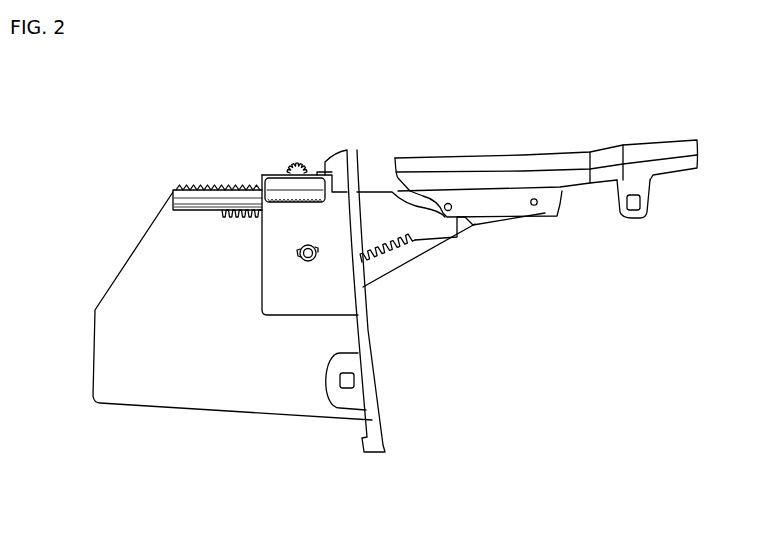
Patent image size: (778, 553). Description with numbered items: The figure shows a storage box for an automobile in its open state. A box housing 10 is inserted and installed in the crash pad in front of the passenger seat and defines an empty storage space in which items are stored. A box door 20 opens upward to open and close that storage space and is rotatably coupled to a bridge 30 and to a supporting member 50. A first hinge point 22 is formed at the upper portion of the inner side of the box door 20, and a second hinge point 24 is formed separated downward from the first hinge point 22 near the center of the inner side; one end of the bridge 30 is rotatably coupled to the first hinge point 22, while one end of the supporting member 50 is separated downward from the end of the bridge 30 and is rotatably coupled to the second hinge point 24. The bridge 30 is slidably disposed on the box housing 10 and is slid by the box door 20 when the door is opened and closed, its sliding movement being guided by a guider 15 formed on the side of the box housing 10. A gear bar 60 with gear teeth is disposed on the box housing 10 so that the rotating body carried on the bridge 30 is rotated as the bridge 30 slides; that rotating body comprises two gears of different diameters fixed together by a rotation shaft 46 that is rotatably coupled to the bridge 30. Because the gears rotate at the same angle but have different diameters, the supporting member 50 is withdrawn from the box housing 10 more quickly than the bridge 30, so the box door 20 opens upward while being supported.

The box housing 10 is at (228, 401).
The guider 15 is at (240, 189).
The box door 20 is at (563, 161).
The first hinge point 22 is at (444, 203).
The second hinge point 24 is at (532, 198).
The bridge 30 is at (262, 248).
The rotation shaft 46 is at (300, 253).
The supporting member 50 is at (408, 258).
The gear bar 60 is at (173, 191).